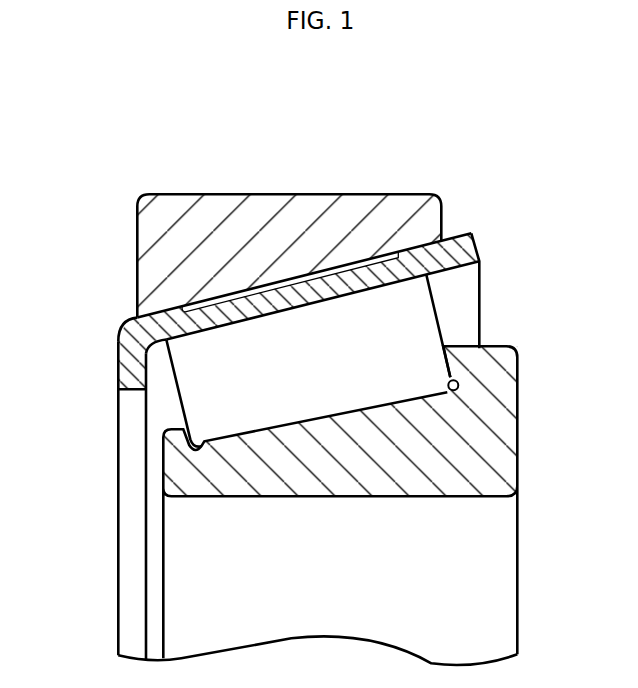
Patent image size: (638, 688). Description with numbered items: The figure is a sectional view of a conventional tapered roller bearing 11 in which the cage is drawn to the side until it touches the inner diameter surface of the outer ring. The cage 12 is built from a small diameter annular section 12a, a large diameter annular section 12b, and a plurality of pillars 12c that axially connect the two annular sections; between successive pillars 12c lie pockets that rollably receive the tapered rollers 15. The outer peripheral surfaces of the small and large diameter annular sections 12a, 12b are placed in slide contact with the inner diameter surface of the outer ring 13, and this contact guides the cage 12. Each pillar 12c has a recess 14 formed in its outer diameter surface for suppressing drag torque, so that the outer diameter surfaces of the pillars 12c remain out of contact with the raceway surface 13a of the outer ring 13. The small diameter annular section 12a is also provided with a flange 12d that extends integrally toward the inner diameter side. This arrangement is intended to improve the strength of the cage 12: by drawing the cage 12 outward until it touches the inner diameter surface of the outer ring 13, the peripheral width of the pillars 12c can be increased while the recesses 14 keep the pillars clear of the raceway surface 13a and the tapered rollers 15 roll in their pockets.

The tapered roller bearing 11 is at (519, 183).
The cage 12 is at (473, 236).
The small diameter annular section 12a is at (137, 312).
The large diameter annular section 12b is at (457, 246).
The pillar 12c is at (242, 312).
The flange 12d is at (118, 378).
The outer ring 13 is at (280, 196).
The raceway surface 13a is at (260, 289).
The recess 14 is at (343, 260).
The tapered roller 15 is at (393, 380).